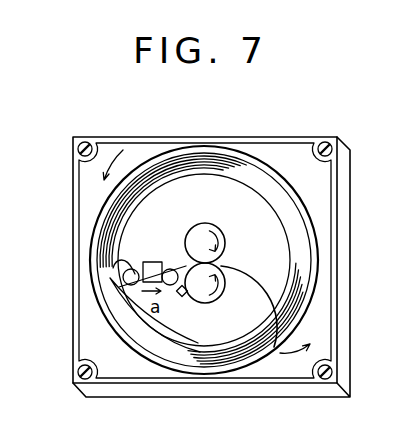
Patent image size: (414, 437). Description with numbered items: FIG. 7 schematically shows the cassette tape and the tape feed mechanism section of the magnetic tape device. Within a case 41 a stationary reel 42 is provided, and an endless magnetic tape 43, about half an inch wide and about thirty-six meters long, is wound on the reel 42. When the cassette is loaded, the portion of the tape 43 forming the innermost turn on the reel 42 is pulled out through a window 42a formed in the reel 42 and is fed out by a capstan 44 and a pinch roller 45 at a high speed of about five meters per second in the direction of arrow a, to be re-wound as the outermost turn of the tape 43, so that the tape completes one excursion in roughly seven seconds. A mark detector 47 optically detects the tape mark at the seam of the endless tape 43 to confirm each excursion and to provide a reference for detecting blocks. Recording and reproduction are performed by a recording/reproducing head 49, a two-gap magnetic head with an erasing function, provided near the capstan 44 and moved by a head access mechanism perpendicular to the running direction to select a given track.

The case 41 is at (272, 137).
The stationary reel 42 is at (292, 231).
The window 42a is at (113, 263).
The endless magnetic tape 43 is at (104, 223).
The capstan 44 is at (206, 223).
The pinch roller 45 is at (216, 300).
The mark detector 47 is at (181, 297).
The recording/reproducing head 49 is at (151, 262).